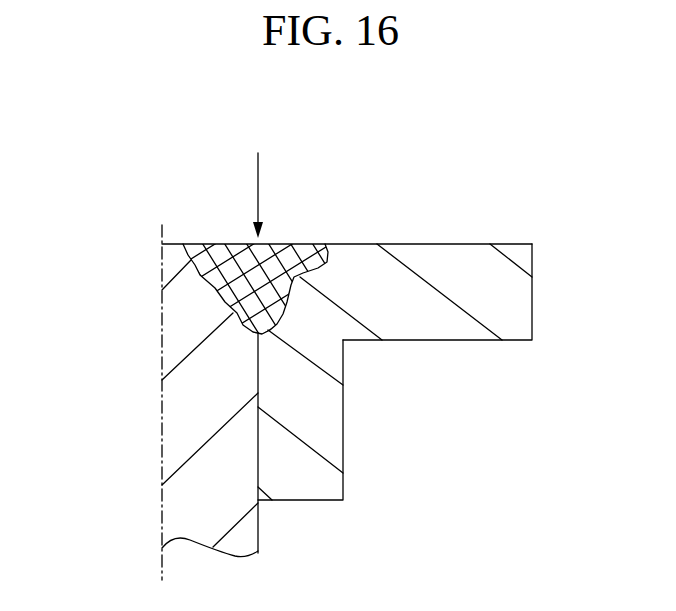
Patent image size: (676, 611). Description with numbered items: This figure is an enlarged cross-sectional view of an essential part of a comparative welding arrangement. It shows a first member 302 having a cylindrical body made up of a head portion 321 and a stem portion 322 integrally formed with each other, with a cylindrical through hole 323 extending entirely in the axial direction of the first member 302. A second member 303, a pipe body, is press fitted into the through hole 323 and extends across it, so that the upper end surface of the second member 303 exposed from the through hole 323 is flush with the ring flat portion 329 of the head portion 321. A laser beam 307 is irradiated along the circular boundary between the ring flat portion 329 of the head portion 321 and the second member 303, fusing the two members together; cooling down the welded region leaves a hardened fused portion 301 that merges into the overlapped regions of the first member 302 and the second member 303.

The fused portion 301 is at (243, 270).
The first member 302 is at (468, 342).
The second member 303 is at (185, 435).
The laser beam 307 is at (258, 188).
The head portion 321 is at (482, 293).
The stem portion 322 is at (313, 423).
The through hole 323 is at (258, 467).
The ring flat portion 329 is at (423, 244).